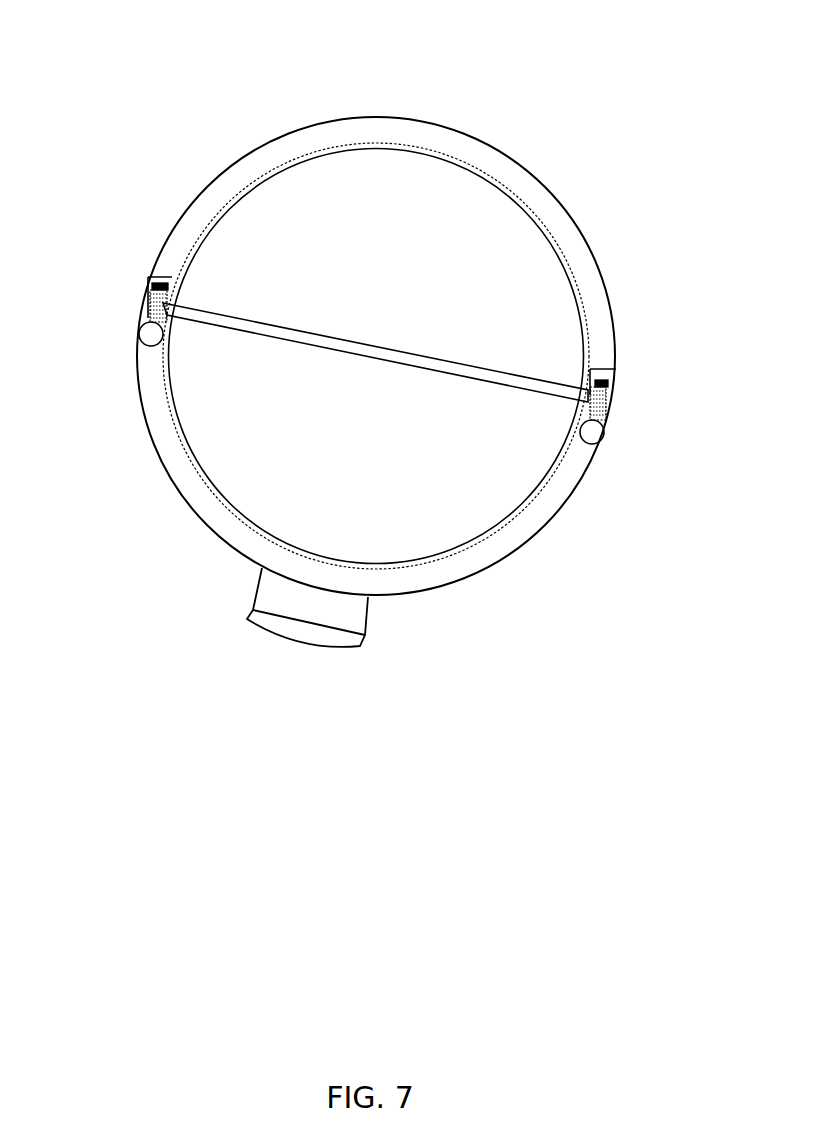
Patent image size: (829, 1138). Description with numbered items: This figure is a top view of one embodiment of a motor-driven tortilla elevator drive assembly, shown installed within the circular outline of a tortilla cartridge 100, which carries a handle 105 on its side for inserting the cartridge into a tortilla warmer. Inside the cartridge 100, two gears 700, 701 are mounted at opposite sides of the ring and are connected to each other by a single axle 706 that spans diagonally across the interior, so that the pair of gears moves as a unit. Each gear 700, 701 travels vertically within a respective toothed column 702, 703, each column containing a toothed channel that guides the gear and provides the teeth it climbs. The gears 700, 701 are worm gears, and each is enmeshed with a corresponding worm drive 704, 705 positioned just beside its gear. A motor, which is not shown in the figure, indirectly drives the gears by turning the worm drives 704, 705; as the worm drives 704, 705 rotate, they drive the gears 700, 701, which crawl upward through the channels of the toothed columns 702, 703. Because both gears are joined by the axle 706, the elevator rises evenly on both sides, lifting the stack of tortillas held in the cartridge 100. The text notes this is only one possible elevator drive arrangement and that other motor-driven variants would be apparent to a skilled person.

The cartridge 100 is at (423, 99).
The handle 105 is at (302, 642).
The gear 700 is at (148, 295).
The gear 701 is at (607, 393).
The toothed column 702 is at (160, 274).
The toothed column 703 is at (605, 372).
The worm drive 704 is at (147, 333).
The worm drive 705 is at (597, 432).
The axle 706 is at (388, 348).